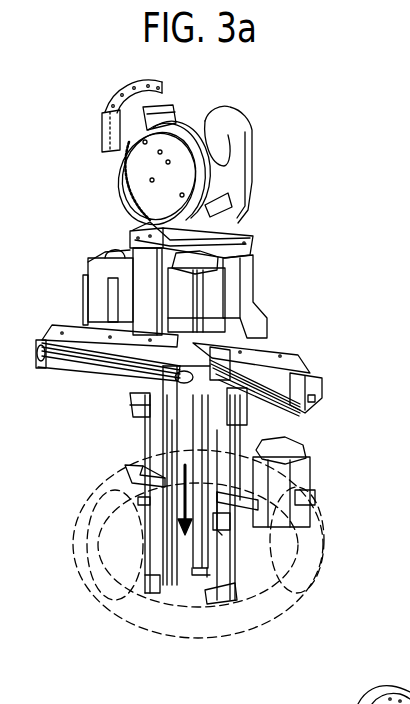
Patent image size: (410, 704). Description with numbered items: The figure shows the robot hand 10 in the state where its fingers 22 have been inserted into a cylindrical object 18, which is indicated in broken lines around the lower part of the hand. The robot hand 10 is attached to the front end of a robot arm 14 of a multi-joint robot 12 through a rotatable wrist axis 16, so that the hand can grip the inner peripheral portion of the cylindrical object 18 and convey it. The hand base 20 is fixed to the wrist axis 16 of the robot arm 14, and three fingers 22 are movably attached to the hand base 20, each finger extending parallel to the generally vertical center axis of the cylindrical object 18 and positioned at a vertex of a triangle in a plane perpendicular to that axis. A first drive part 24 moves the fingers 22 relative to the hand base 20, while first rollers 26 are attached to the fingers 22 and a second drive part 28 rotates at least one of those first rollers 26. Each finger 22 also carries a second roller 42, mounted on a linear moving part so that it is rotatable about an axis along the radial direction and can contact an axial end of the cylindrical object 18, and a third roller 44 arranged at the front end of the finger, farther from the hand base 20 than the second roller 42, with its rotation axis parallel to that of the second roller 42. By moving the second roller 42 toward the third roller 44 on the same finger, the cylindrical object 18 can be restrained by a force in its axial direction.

The robot hand 10 is at (78, 222).
The multi-joint robot 12 is at (262, 101).
The robot arm 14 is at (238, 172).
The wrist axis 16 is at (240, 222).
The cylindrical object 18 is at (77, 570).
The hand base 20 is at (73, 326).
The fingers 22 is at (194, 582).
The first drive part 24 is at (213, 292).
The first rollers 26 is at (157, 548).
The second drive part 28 is at (300, 477).
The second roller 42 is at (260, 542).
The third roller 44 is at (222, 582).